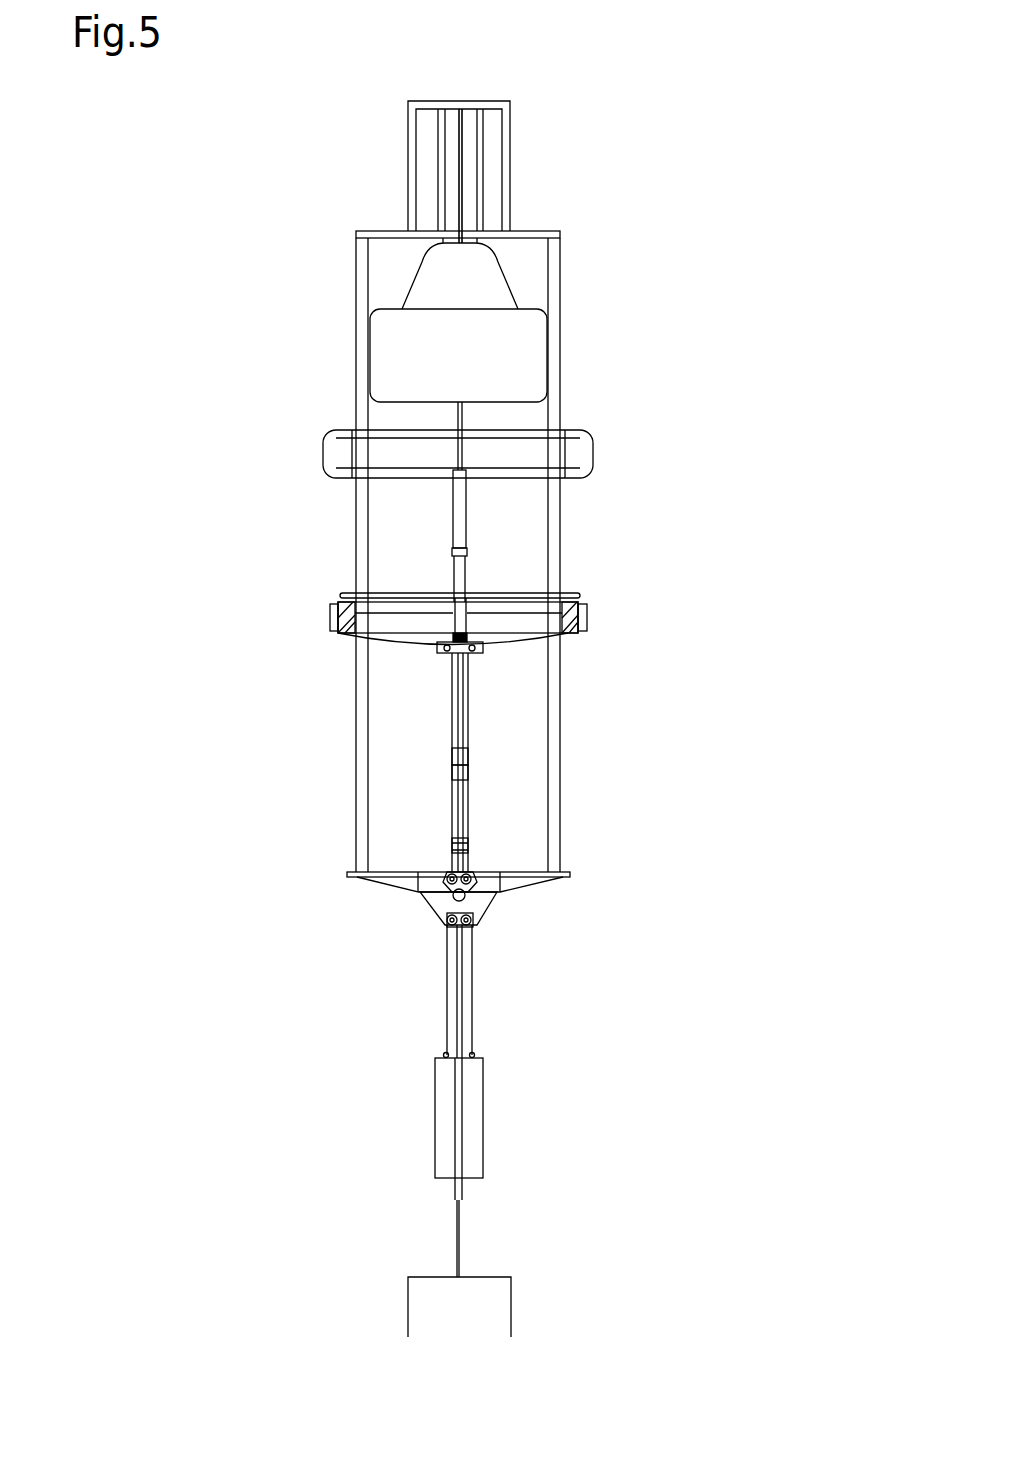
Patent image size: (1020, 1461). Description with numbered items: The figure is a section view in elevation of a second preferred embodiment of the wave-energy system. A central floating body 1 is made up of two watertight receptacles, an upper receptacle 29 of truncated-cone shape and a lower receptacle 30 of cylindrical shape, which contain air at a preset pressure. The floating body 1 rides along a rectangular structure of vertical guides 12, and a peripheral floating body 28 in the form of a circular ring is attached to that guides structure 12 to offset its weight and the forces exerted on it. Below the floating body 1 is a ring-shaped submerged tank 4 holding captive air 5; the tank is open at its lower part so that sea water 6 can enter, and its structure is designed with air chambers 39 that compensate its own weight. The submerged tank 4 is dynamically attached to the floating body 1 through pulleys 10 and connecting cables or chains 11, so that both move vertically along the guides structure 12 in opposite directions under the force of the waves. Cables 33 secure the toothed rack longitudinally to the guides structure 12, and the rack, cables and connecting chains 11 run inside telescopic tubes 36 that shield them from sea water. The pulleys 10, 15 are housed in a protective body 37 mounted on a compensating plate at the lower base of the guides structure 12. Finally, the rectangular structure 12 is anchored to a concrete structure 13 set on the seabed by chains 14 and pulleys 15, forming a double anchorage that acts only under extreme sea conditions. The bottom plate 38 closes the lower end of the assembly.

The central floating body 1 is at (370, 296).
The submerged tank 4 is at (618, 628).
The captive air 5 is at (576, 599).
The sea water 6 is at (569, 635).
The pulleys 10 is at (350, 875).
The connecting cables or chains 11 is at (345, 614).
The structure of vertical guides 12 is at (560, 781).
The concrete structure 13 is at (472, 1312).
The chains 14 is at (472, 998).
The pulleys 15 is at (473, 920).
The peripheral floating body 28 is at (337, 454).
The upper receptacle 29 is at (473, 280).
The lower receptacle 30 is at (387, 380).
The cables 33 is at (460, 180).
The telescopic tubes 36 is at (478, 198).
The body 37 is at (437, 913).
The bottom plate 38 is at (571, 870).
The air chambers 39 is at (332, 610).